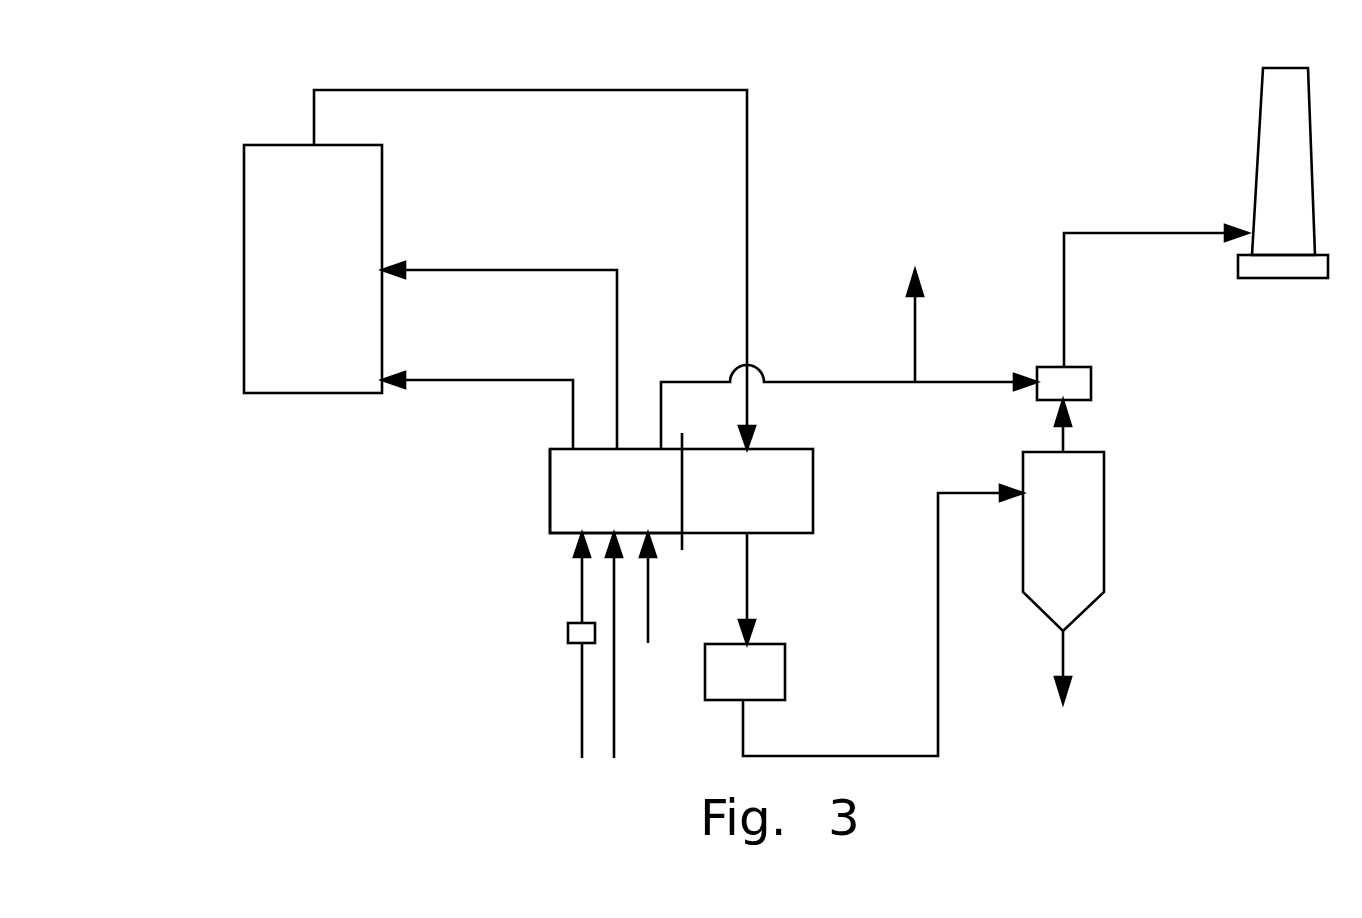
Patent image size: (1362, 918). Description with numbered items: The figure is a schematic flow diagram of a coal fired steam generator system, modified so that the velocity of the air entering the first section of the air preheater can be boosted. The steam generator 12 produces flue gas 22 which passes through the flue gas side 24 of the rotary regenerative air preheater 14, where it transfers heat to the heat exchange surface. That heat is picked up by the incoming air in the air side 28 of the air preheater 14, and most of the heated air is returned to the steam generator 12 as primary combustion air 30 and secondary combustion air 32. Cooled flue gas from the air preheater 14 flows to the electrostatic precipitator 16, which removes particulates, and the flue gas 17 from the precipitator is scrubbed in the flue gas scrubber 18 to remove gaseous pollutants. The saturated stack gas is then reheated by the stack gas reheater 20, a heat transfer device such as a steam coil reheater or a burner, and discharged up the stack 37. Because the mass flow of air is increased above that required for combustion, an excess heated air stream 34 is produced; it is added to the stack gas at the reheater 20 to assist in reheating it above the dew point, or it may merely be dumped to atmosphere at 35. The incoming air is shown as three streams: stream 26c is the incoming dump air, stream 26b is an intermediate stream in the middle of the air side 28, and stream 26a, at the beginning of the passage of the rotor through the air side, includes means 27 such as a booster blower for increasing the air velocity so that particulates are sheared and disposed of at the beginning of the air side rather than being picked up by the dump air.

The steam generator 12 is at (260, 202).
The air preheater 14 is at (805, 492).
The electrostatic precipitator 16 is at (773, 658).
The flue gas 17 is at (803, 756).
The flue gas scrubber 18 is at (1093, 492).
The stack gas reheater 20 is at (1091, 385).
The flue gas 22 is at (505, 88).
The flue gas side 24 is at (782, 468).
The incoming air stream 26a is at (580, 727).
The intermediate air stream 26b is at (616, 733).
The incoming dump air 26c is at (650, 600).
The booster blower 27 is at (568, 635).
The air side 28 is at (563, 465).
The primary combustion air 30 is at (448, 380).
The secondary combustion air 32 is at (473, 270).
The excess heated air stream 34 is at (795, 382).
The dump air 35 is at (915, 345).
The stack 37 is at (1267, 194).